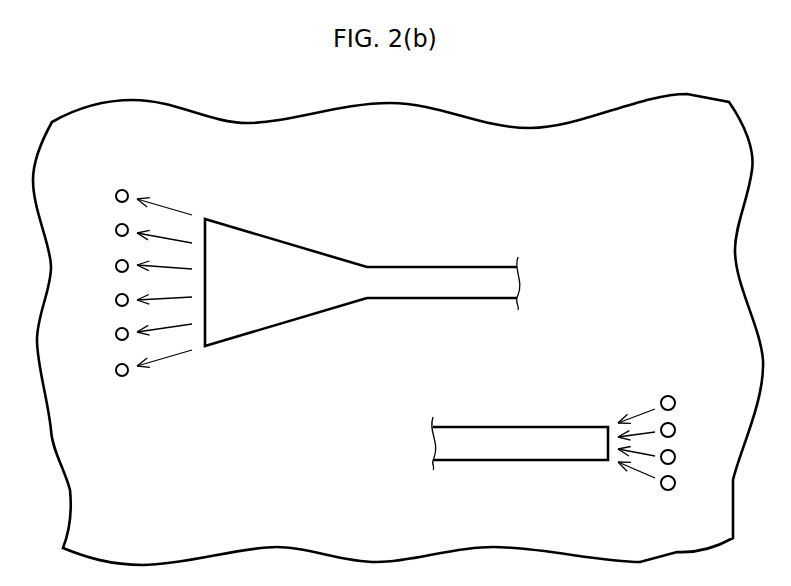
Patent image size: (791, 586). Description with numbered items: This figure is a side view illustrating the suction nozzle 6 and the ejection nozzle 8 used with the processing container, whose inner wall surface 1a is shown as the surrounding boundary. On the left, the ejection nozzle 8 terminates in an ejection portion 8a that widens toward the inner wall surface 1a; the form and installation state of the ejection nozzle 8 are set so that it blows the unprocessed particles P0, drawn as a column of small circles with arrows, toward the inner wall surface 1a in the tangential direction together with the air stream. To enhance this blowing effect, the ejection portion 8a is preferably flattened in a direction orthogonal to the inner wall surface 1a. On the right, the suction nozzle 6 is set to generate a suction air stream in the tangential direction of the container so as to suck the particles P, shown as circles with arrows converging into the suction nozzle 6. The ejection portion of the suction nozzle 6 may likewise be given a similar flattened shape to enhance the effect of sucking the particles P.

The inner wall surface 1a is at (440, 176).
The ejection nozzle 8 is at (447, 277).
The ejection portion 8a is at (277, 255).
The suction nozzle 6 is at (527, 440).
The unprocessed particles P0 is at (122, 189).
The particles P is at (676, 403).